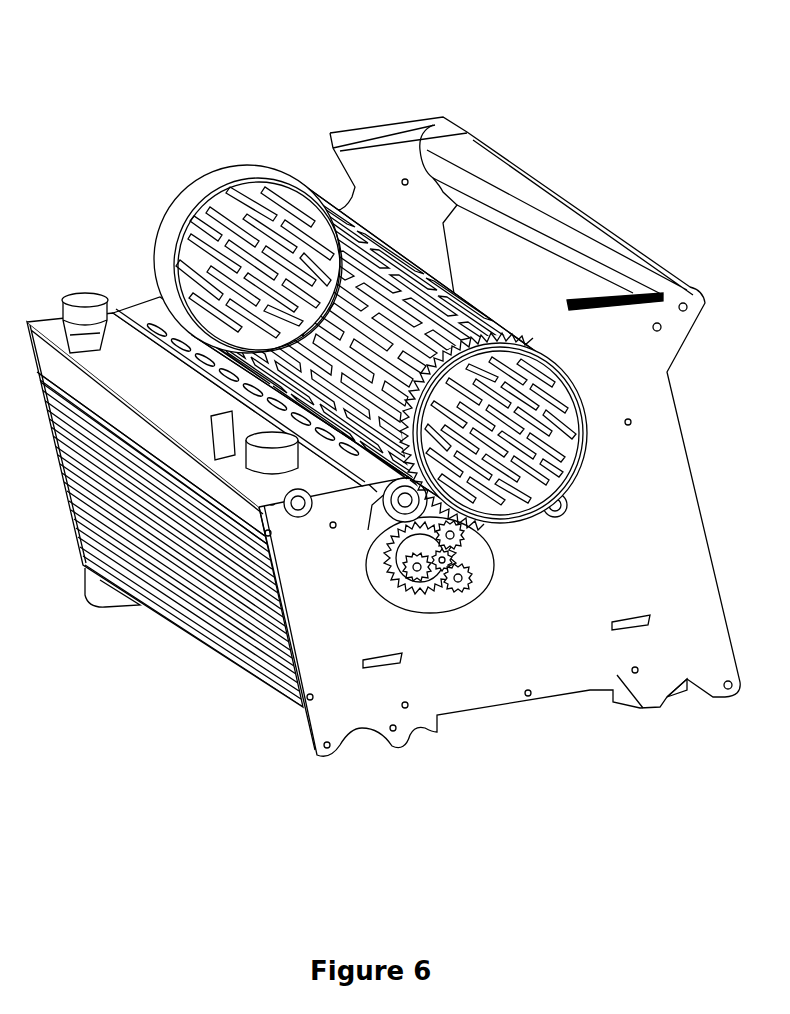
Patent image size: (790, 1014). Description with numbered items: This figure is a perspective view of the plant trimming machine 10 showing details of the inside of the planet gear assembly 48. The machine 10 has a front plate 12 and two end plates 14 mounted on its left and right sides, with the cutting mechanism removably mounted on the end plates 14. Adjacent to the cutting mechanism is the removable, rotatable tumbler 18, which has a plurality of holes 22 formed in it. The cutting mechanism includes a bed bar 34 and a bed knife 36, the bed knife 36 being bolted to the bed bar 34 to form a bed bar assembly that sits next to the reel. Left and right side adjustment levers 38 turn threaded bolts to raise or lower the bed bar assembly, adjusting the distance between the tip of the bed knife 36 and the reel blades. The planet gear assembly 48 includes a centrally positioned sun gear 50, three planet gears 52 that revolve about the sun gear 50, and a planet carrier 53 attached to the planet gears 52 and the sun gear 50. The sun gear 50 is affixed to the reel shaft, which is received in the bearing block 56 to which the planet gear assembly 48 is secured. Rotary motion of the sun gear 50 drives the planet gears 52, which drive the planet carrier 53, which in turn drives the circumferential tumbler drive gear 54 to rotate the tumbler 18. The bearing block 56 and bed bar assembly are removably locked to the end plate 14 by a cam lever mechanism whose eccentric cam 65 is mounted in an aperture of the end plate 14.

The plant trimming machine 10 is at (150, 103).
The front plate 12 is at (205, 612).
The end plate 14 is at (642, 695).
The tumbler 18 is at (349, 317).
The holes 22 is at (284, 212).
The bed bar 34 is at (147, 401).
The bed knife 36 is at (142, 328).
The adjustment lever 38 is at (58, 313).
The planet gear assembly 48 is at (500, 590).
The sun gear 50 is at (450, 558).
The planet gears 52 is at (460, 593).
The planet carrier 53 is at (443, 582).
The tumbler drive gear 54 is at (548, 352).
The bearing block 56 is at (378, 588).
The eccentric cam 65 is at (310, 503).